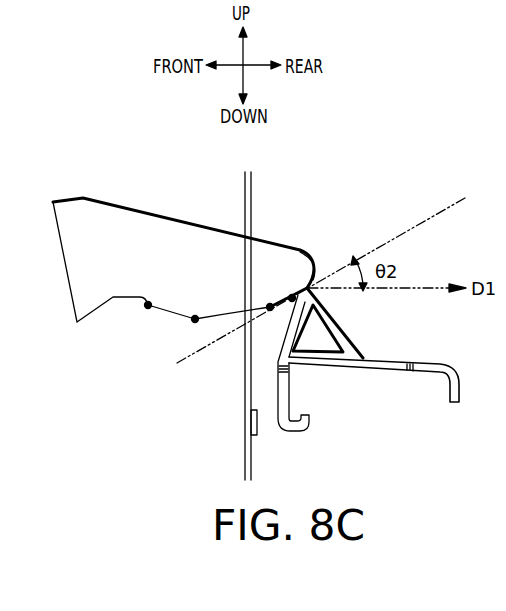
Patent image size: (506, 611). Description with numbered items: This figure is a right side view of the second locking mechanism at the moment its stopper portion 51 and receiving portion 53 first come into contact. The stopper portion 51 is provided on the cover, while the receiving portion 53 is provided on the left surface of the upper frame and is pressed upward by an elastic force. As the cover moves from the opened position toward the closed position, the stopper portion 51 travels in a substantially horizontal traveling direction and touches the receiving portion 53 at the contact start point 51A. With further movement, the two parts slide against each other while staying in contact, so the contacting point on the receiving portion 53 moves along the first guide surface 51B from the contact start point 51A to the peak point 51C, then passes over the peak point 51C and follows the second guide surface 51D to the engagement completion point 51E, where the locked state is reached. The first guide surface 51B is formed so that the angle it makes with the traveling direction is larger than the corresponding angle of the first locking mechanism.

The stopper portion 51 is at (77, 200).
The contact start point 51A is at (300, 252).
The first guide surface 51B is at (292, 298).
The peak point 51C is at (270, 307).
The second guide surface 51D is at (195, 319).
The engagement completion point 51E is at (148, 305).
The receiving portion 53 is at (462, 403).